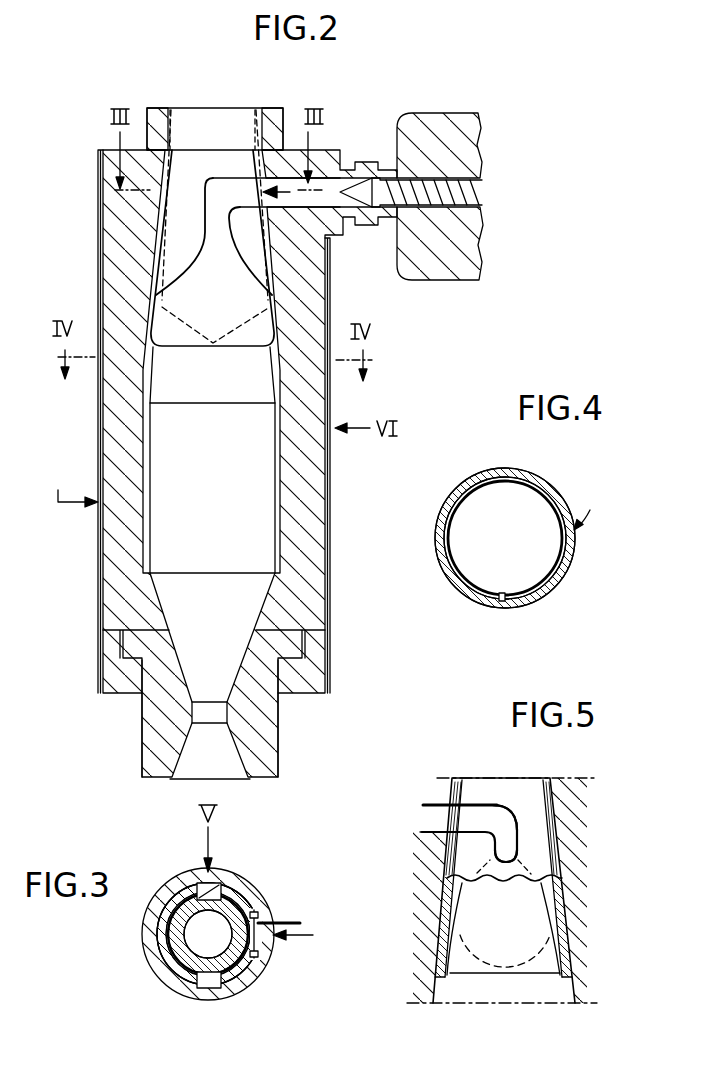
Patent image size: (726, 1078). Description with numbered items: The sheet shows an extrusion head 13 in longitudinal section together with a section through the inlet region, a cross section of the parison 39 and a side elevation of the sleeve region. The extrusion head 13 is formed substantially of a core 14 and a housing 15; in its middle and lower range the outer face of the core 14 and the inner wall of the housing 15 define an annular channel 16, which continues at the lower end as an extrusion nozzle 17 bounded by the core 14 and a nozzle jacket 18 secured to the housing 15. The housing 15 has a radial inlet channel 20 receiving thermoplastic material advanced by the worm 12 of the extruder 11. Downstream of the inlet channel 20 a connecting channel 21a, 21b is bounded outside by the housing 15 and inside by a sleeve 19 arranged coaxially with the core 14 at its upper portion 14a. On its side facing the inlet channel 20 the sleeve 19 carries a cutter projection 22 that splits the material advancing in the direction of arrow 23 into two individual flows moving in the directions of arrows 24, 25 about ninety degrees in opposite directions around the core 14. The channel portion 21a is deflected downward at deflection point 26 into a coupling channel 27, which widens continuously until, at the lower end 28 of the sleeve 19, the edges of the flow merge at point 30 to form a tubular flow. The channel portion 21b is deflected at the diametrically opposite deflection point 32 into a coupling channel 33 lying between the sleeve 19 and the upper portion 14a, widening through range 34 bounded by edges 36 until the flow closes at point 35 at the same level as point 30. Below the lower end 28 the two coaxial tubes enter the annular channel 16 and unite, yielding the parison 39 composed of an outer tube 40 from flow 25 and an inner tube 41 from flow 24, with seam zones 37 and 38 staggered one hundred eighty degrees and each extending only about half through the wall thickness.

In FIG. 2, the extruder 11 is at (460, 125).
In FIG. 2, the worm 12 is at (470, 195).
In FIG. 2, the extrusion head 13 is at (74, 492).
In FIG. 2, the core 14 is at (253, 462).
In FIG. 3, the core 14 is at (196, 946).
In FIG. 2, the upper portion of the core 14a is at (187, 160).
In FIG. 2, the housing 15 is at (308, 548).
In FIG. 3, the housing 15 is at (246, 897).
In FIG. 2, the annular channel 16 is at (143, 530).
In FIG. 2, the extrusion nozzle 17 is at (175, 778).
In FIG. 2, the nozzle jacket 18 is at (272, 758).
In FIG. 2, the sleeve 19 is at (160, 262).
In FIG. 3, the sleeve 19 is at (153, 940).
In FIG. 5, the sleeve 19 is at (438, 908).
In FIG. 2, the radial inlet channel 20 is at (328, 260).
In FIG. 3, the radial inlet channel 20 is at (293, 919).
In FIG. 5, the radial inlet channel 20 is at (437, 805).
In FIG. 2, the connecting channel portion 21a is at (233, 190).
In FIG. 3, the connecting channel portion 21a is at (250, 973).
In FIG. 3, the connecting channel portion 21b is at (247, 897).
In FIG. 5, the connecting channel portion 21b is at (477, 820).
In FIG. 2, the cutter projection 22 is at (265, 182).
In FIG. 3, the cutter projection 22 is at (242, 988).
In FIG. 5, the cutter projection 22 is at (447, 777).
In FIG. 2, the arrow 23 is at (277, 200).
In FIG. 3, the arrow 23 is at (308, 942).
In FIG. 3, the arrow 24 is at (259, 915).
In FIG. 3, the arrow 25 is at (261, 958).
In FIG. 2, the deflection point 26 is at (168, 132).
In FIG. 3, the deflection point 26 is at (202, 988).
In FIG. 2, the coupling channel 27 is at (200, 228).
In FIG. 2, the lower end of the sleeve 28 is at (178, 355).
In FIG. 5, the lower end of the sleeve 28 is at (443, 983).
In FIG. 2, the lower end of the bounding edges 30 is at (212, 348).
In FIG. 3, the deflection point 32 is at (223, 888).
In FIG. 5, the deflection point 32 is at (498, 817).
In FIG. 5, the coupling channel 33 is at (508, 850).
In FIG. 5, the widening range 34 is at (510, 908).
In FIG. 5, the lower point of the bounding edges 35 is at (503, 970).
In FIG. 5, the bounding edges 36 is at (550, 893).
In FIG. 4, the seam zone 37 is at (505, 470).
In FIG. 4, the seam zone 38 is at (502, 598).
In FIG. 4, the parison 39 is at (589, 509).
In FIG. 4, the outer tube 40 is at (540, 495).
In FIG. 4, the inner tube 41 is at (553, 497).